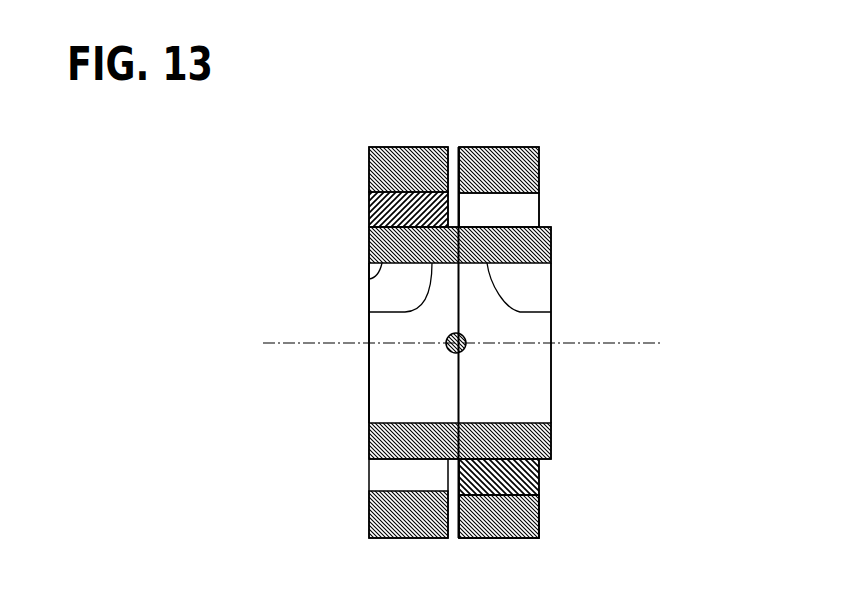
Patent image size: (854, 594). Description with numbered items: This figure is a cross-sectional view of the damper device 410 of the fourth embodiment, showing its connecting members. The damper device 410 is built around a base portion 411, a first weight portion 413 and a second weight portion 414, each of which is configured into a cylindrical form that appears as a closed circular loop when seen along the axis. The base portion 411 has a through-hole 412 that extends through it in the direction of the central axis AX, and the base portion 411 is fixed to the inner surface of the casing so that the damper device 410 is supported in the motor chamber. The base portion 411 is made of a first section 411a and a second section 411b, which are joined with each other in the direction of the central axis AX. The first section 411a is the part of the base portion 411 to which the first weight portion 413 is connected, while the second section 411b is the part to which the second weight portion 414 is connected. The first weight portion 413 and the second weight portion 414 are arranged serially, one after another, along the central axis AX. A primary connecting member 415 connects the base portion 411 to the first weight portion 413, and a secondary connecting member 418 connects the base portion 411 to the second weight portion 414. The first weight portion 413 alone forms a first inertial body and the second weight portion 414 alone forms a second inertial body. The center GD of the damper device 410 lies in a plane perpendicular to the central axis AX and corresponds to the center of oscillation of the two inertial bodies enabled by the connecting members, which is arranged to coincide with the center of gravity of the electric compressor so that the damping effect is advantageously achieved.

The damper device 410 is at (575, 175).
The base portion 411 is at (355, 245).
The first section 411a is at (369, 312).
The second section 411b is at (551, 312).
The through-hole 412 is at (369, 279).
The first weight portion 413 is at (367, 167).
The second weight portion 414 is at (540, 518).
The primary connecting member 415 is at (367, 210).
The secondary connecting member 418 is at (540, 472).
The central axis AX is at (308, 345).
The center of the damper device GD is at (463, 350).